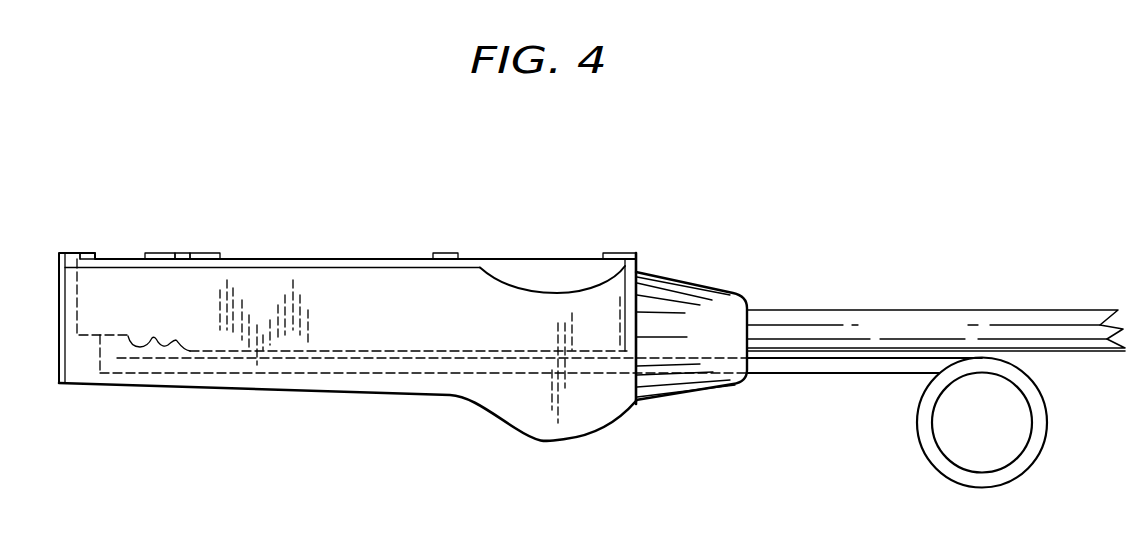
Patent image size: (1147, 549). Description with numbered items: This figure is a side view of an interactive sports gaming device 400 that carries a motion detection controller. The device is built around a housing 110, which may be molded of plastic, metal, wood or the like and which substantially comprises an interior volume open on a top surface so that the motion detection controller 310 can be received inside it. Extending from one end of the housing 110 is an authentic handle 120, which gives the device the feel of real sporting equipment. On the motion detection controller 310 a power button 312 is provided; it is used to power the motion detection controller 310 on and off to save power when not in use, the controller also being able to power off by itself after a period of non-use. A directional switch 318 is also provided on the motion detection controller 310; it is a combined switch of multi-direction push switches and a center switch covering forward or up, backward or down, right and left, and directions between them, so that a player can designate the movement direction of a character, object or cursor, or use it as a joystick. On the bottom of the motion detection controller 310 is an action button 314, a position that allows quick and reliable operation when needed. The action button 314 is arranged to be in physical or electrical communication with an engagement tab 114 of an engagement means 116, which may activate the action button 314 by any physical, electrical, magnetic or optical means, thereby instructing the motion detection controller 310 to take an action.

The interactive sports gaming device 400 is at (553, 122).
The housing 110 is at (532, 422).
The engagement tab 114 is at (128, 341).
The engagement means 116 is at (956, 473).
The authentic handle 120 is at (917, 318).
The motion detection controller 310 is at (540, 268).
The power button 312 is at (88, 253).
The action button 314 is at (147, 340).
The directional switch 318 is at (202, 253).